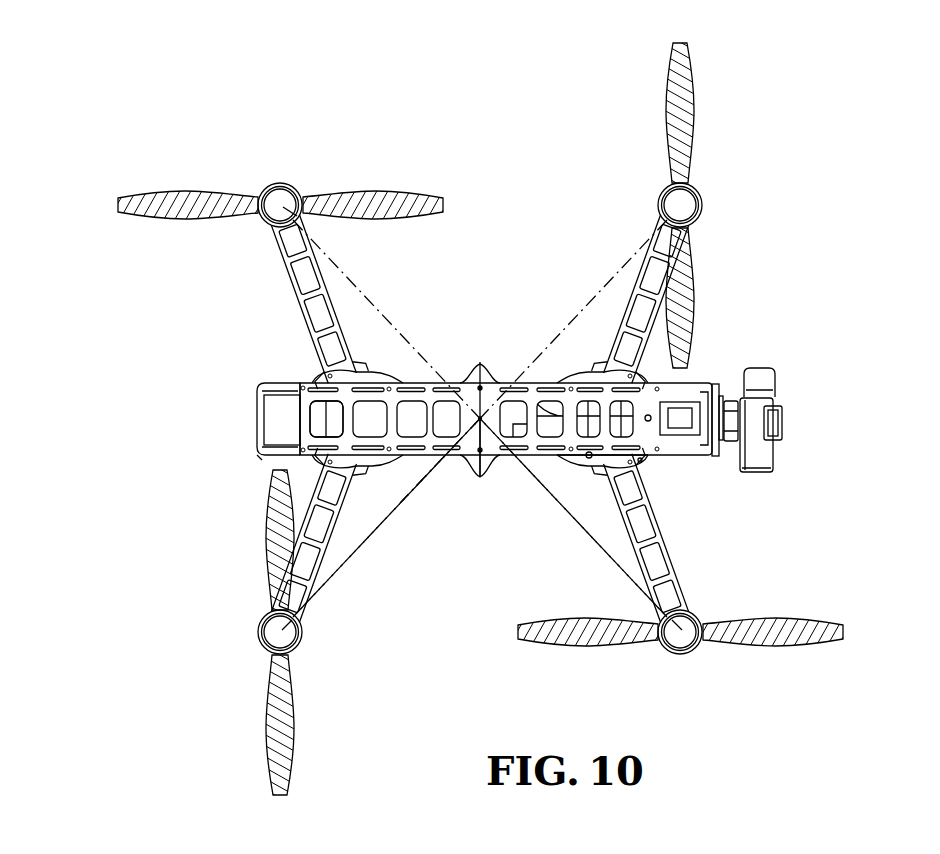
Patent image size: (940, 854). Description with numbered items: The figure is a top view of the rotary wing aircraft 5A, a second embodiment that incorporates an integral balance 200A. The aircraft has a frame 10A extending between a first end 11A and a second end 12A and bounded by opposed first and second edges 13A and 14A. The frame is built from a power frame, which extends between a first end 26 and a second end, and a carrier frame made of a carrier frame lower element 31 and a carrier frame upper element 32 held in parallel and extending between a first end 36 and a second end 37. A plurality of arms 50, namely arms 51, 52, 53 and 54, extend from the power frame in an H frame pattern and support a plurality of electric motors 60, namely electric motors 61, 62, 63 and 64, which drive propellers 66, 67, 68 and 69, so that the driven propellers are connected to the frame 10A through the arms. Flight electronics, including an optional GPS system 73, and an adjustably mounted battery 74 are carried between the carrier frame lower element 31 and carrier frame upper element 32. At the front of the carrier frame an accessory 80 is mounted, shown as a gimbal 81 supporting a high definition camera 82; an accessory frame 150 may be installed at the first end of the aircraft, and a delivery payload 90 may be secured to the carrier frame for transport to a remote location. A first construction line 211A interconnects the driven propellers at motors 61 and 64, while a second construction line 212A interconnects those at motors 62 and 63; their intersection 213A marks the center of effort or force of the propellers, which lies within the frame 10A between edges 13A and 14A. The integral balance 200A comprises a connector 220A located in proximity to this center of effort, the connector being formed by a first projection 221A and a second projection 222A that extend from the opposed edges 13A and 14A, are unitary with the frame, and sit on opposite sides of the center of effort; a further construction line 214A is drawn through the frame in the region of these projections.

The rotary wing aircraft 5A is at (138, 326).
The frame 10A is at (412, 382).
The first end 11A is at (721, 383).
The second end 12A is at (259, 384).
The first edge 13A is at (573, 465).
The second edge 14A is at (295, 378).
The first end of power frame 26 is at (640, 462).
The carrier frame lower element 31 is at (259, 453).
The carrier frame upper element 32 is at (306, 429).
The first end of carrier frame 36 is at (722, 458).
The second end of carrier frame 37 is at (262, 460).
The plurality of arms 50 is at (686, 537).
The arm 51 is at (657, 532).
The arm 52 is at (334, 560).
The arm 53 is at (651, 250).
The arm 54 is at (300, 281).
The plurality of electric motors 60 is at (712, 206).
The electric motor 61 is at (676, 651).
The electric motor 62 is at (258, 633).
The electric motor 63 is at (657, 205).
The electric motor 64 is at (307, 222).
The propeller 66 is at (780, 641).
The propeller 67 is at (296, 704).
The propeller 68 is at (672, 108).
The propeller 69 is at (201, 198).
The GPS system 73 is at (589, 460).
The battery 74 is at (268, 396).
The accessory 80 is at (810, 429).
The gimbal 81 is at (728, 456).
The high definition camera 82 is at (783, 424).
The delivery payload 90 is at (812, 450).
The accessory frame 150 is at (825, 450).
The integral balance 200A is at (506, 305).
The first construction line 211A is at (618, 570).
The second construction line 212A is at (352, 556).
The intersection 213A is at (514, 382).
The fourth arm axis 214A is at (468, 457).
The connector 220A is at (448, 355).
The first projection 221A is at (509, 460).
The second projection 222A is at (481, 378).